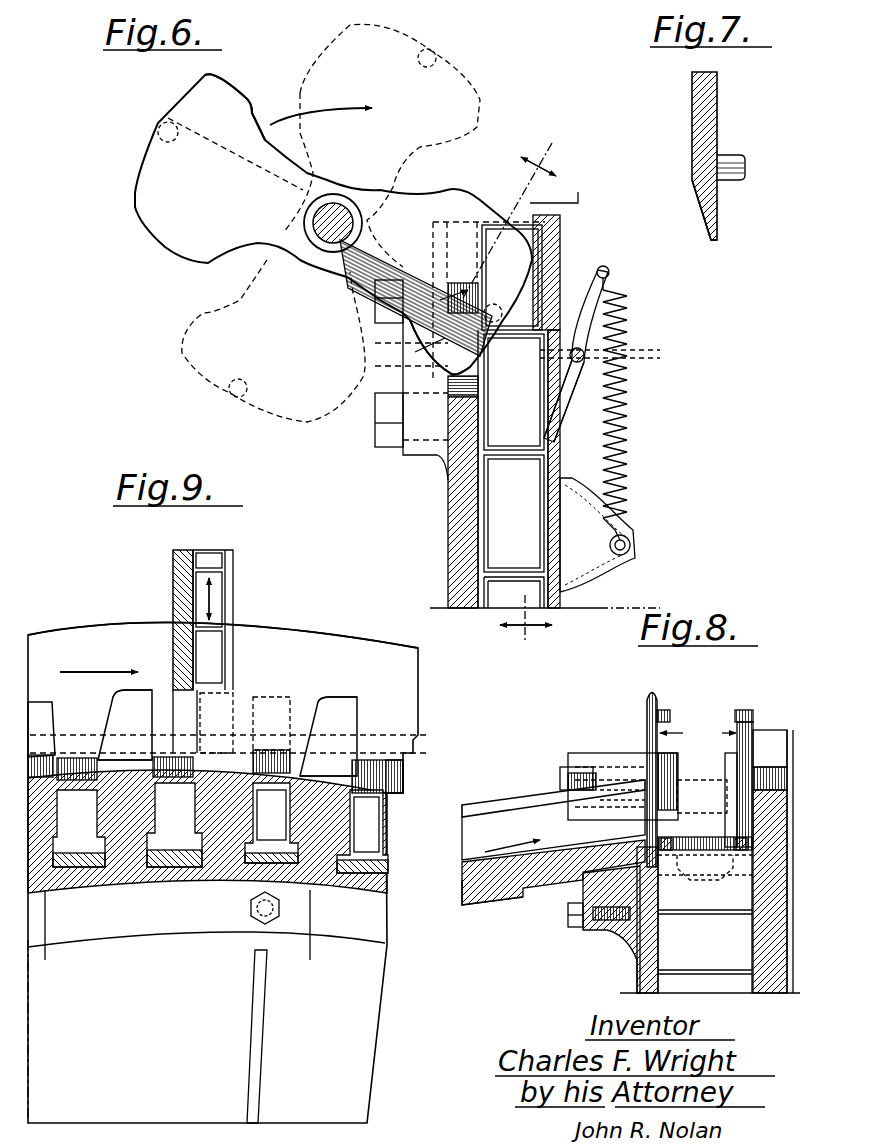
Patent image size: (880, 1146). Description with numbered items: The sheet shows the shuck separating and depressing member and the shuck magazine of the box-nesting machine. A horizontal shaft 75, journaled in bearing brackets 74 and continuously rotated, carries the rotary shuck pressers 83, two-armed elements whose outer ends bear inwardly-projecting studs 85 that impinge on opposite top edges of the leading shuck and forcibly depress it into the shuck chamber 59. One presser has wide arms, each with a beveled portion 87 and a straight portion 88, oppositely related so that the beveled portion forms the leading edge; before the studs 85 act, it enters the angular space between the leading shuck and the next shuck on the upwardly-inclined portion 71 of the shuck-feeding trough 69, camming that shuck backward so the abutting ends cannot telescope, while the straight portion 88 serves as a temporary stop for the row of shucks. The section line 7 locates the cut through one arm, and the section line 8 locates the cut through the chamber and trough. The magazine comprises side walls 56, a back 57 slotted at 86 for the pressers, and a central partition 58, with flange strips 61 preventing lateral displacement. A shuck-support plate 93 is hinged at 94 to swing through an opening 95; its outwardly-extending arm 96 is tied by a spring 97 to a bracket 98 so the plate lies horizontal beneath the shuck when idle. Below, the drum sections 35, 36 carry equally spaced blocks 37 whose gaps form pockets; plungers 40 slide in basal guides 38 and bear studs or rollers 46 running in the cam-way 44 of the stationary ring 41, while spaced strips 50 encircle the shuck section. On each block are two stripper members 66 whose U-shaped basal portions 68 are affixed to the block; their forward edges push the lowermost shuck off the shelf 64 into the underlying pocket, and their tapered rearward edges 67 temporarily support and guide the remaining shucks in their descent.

In FIG. 9, the drum section 35 is at (358, 1000).
In FIG. 9, the drum section 36 is at (120, 892).
In FIG. 9, the blocks 37 is at (179, 934).
In FIG. 9, the basal guides 38 is at (70, 870).
In FIG. 9, the plungers 40 is at (220, 828).
In FIG. 9, the cam ring 41 is at (362, 642).
In FIG. 9, the tray-plunger cam-way 44 is at (404, 790).
In FIG. 9, the studs or rollers 46 is at (420, 750).
In FIG. 9, the strips 50 is at (220, 885).
In FIG. 8, the side walls 56 is at (636, 988).
In FIG. 6, the back 57 is at (446, 553).
In FIG. 9, the back 57 is at (172, 598).
In FIG. 9, the central partition 58 is at (234, 604).
In FIG. 6, the shuck chamber 59 is at (476, 517).
In FIG. 8, the shuck chamber 59 is at (636, 965).
In FIG. 6, the flange strips 61 is at (562, 598).
In FIG. 9, the shelf 64 is at (225, 748).
In FIG. 9, the stripper members 66 is at (152, 700).
In FIG. 9, the tapered rearward edges 67 is at (110, 712).
In FIG. 9, the basal portions 68 is at (110, 760).
In FIG. 8, the shuck-feeding trough 69 is at (472, 804).
In FIG. 8, the upwardly-inclined portion 71 is at (475, 895).
In FIG. 6, the bearing brackets 74 is at (392, 190).
In FIG. 8, the bearing brackets 74 is at (615, 790).
In FIG. 6, the shaft 75 is at (340, 210).
In FIG. 8, the shaft 75 is at (560, 775).
In FIG. 8, the rotary shuck pressers 83 is at (706, 784).
In FIG. 6, the studs 85 is at (155, 128).
In FIG. 7, the studs 85 is at (737, 156).
In FIG. 8, the studs 85 is at (669, 712).
In FIG. 6, the slot 86 is at (446, 381).
In FIG. 8, the slot 86 is at (705, 877).
In FIG. 6, the beveled portion 87 is at (218, 104).
In FIG. 7, the beveled portion 87 is at (706, 210).
In FIG. 8, the beveled portion 87 is at (646, 716).
In FIG. 6, the straight portion 88 is at (152, 214).
In FIG. 7, the straight portion 88 is at (718, 88).
In FIG. 8, the straight portion 88 is at (645, 768).
In FIG. 6, the plate 93 is at (565, 426).
In FIG. 6, the hinge 94 is at (585, 355).
In FIG. 6, the opening 95 is at (565, 406).
In FIG. 6, the arm 96 is at (606, 300).
In FIG. 6, the spring 97 is at (628, 457).
In FIG. 6, the bracket 98 is at (630, 544).
In FIG. 6, the section line 7— 7 is at (510, 216).
In FIG. 6, the section line 8— 8 is at (539, 420).